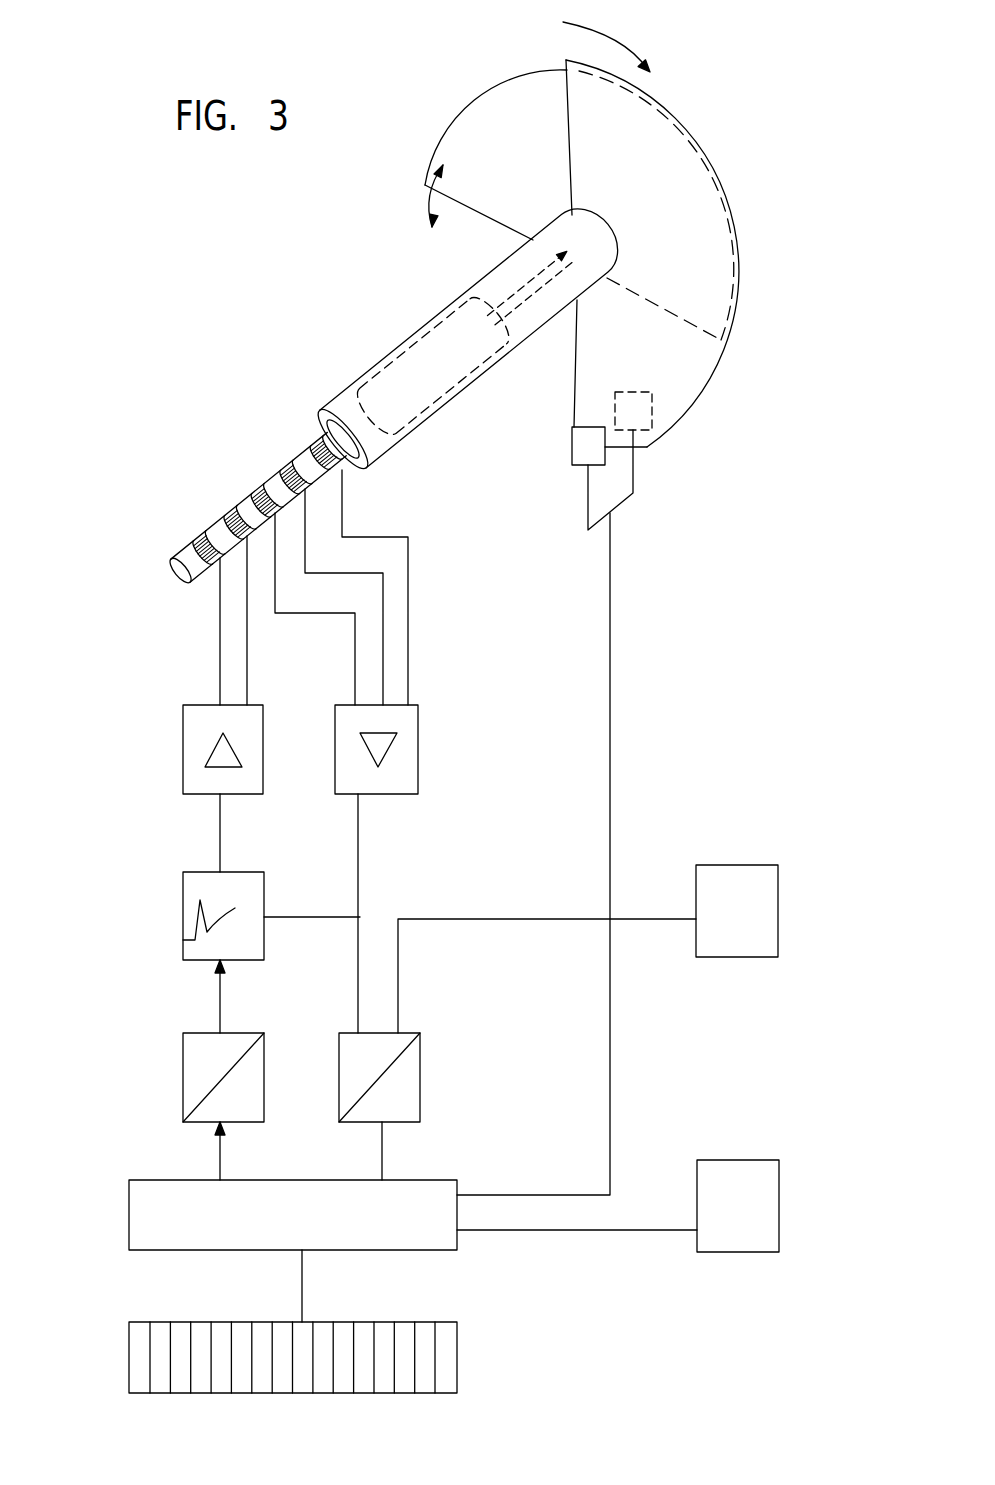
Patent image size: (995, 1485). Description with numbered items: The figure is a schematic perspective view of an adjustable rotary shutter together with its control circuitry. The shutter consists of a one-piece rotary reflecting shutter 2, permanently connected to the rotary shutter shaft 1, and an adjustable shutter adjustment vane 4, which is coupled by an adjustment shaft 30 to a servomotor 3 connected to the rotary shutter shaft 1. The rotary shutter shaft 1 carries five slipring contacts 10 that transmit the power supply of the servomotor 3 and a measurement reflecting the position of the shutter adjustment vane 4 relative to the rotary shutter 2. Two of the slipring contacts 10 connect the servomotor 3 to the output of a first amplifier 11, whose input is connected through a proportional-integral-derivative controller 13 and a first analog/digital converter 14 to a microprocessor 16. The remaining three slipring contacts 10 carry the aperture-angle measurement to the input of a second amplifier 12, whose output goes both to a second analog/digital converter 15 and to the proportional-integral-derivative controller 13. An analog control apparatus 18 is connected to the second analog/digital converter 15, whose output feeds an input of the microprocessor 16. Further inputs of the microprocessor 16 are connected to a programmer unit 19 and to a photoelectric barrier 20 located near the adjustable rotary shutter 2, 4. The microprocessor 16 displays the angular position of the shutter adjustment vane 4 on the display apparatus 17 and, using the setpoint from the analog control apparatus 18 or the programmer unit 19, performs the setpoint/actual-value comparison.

The rotary shutter shaft 1 is at (353, 398).
The rotary reflecting shutter 2 is at (677, 372).
The servomotor 3 is at (430, 380).
The shutter adjustment vane 4 is at (487, 124).
The slipring contacts 10 is at (247, 505).
The first amplifier 11 is at (195, 733).
The second amplifier 12 is at (418, 737).
The proportional-integral-derivative controller 13 is at (190, 897).
The first analog/digital converter 14 is at (190, 1078).
The second analog/digital converter 15 is at (420, 1085).
The microprocessor 16 is at (148, 1215).
The display apparatus 17 is at (443, 1358).
The analog control apparatus 18 is at (753, 920).
The programmer unit 19 is at (760, 1213).
The photoelectric barrier 20 is at (572, 458).
The adjustment shaft 30 is at (530, 282).